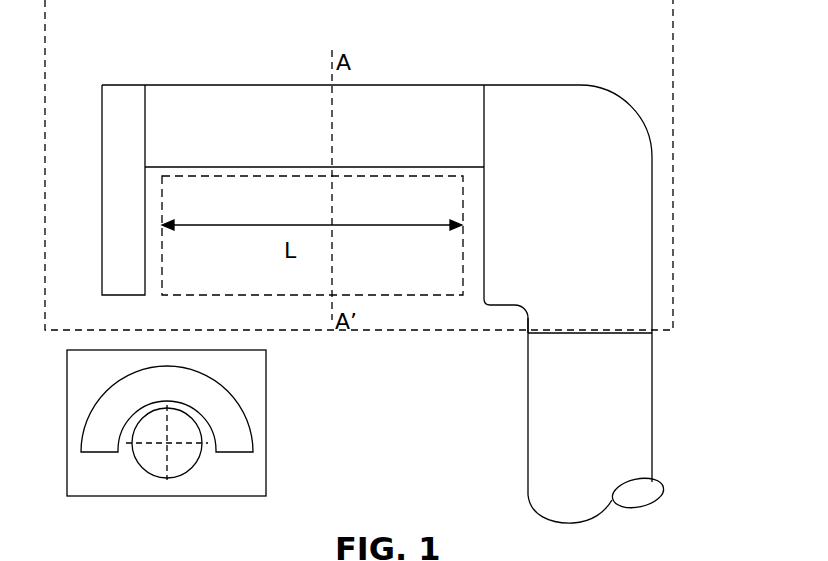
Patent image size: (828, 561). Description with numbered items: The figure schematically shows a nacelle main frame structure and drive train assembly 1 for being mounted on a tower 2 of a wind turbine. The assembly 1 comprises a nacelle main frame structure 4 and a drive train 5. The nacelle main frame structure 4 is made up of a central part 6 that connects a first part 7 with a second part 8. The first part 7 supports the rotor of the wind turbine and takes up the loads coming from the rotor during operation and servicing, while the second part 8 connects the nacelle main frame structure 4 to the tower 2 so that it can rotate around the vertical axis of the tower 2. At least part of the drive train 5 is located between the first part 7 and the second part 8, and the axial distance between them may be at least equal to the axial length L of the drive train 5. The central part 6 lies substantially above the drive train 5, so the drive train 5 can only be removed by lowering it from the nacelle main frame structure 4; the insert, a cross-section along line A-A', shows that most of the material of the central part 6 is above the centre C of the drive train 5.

The nacelle main frame structure and drive train assembly 1 is at (673, 115).
The tower 2 is at (628, 361).
The nacelle main frame structure 4 is at (618, 35).
The drive train 5 is at (120, 466).
The central part 6 is at (297, 102).
The first part 7 is at (131, 102).
The second part 8 is at (556, 95).